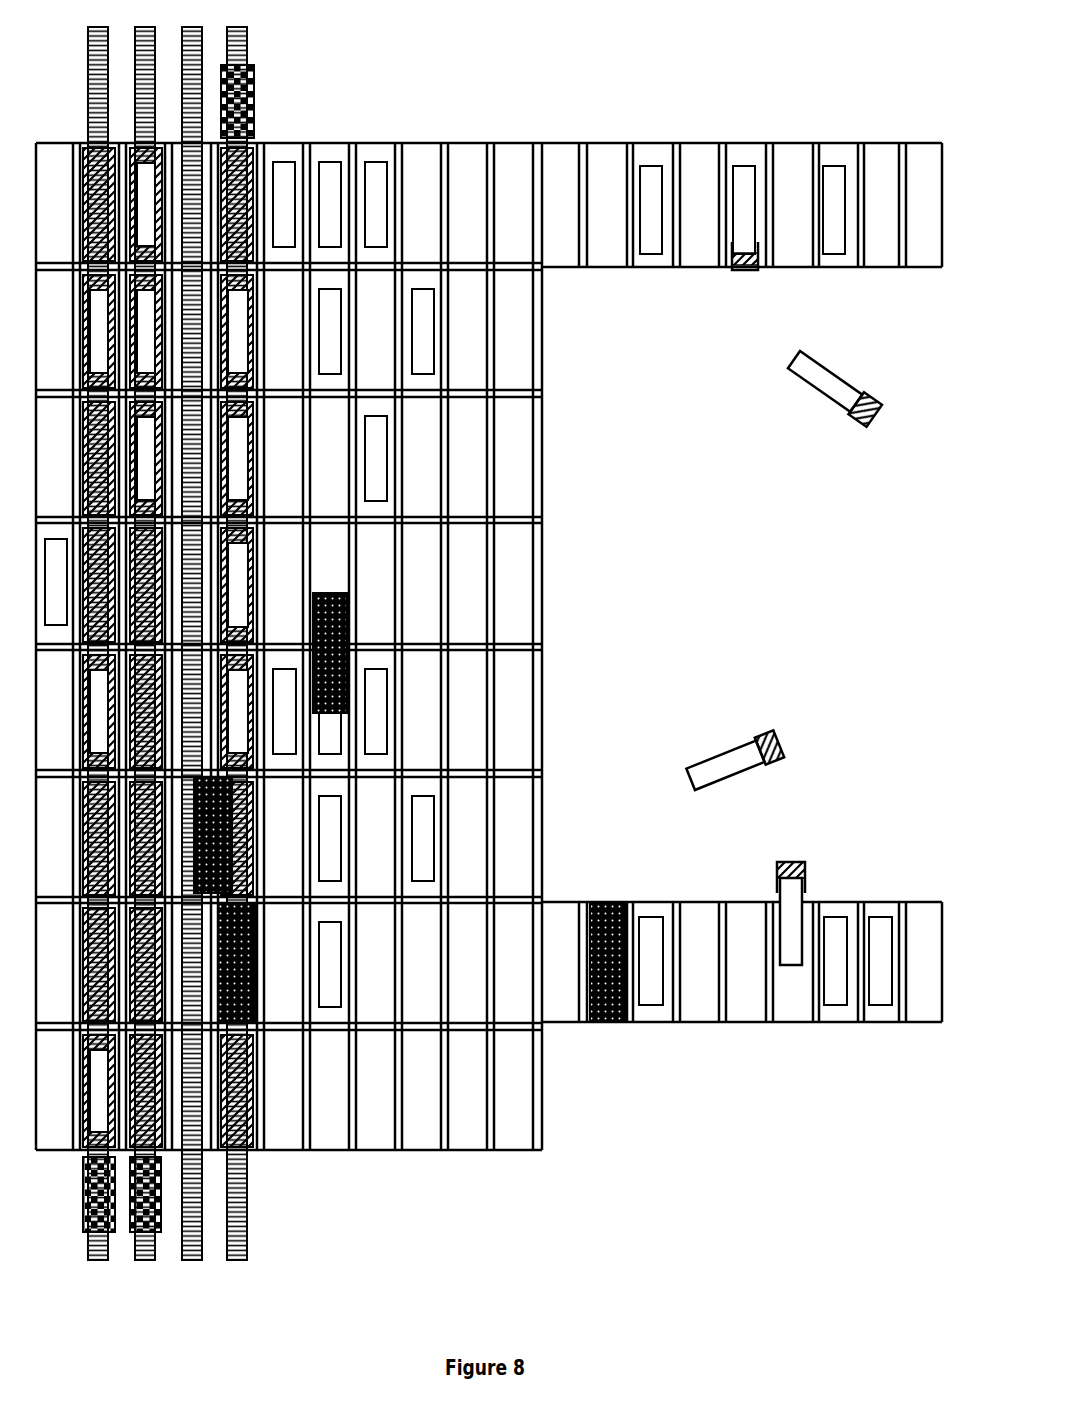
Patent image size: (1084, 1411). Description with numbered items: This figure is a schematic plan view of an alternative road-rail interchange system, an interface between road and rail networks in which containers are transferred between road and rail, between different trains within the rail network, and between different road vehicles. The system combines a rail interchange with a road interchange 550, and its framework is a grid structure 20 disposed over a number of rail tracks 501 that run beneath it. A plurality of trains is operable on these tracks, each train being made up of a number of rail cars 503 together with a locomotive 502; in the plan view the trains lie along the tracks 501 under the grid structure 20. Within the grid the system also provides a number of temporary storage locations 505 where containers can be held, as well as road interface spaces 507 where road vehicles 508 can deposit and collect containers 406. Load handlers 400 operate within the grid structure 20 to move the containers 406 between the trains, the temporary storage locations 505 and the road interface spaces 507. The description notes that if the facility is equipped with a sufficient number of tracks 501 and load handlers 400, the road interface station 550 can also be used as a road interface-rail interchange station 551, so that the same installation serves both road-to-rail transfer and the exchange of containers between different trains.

The grid structure 20 is at (512, 136).
The load handler 400 is at (614, 1031).
The container 406 is at (831, 381).
The rail track 501 is at (209, 1268).
The locomotive 502 is at (262, 92).
The rail car 503 is at (249, 1132).
The temporary storage location 505 is at (517, 578).
The road interface space 507 is at (562, 238).
The road vehicle 508 is at (888, 408).
The road interchange 550 is at (742, 135).
The road interface-rail interchange station 551 is at (742, 962).